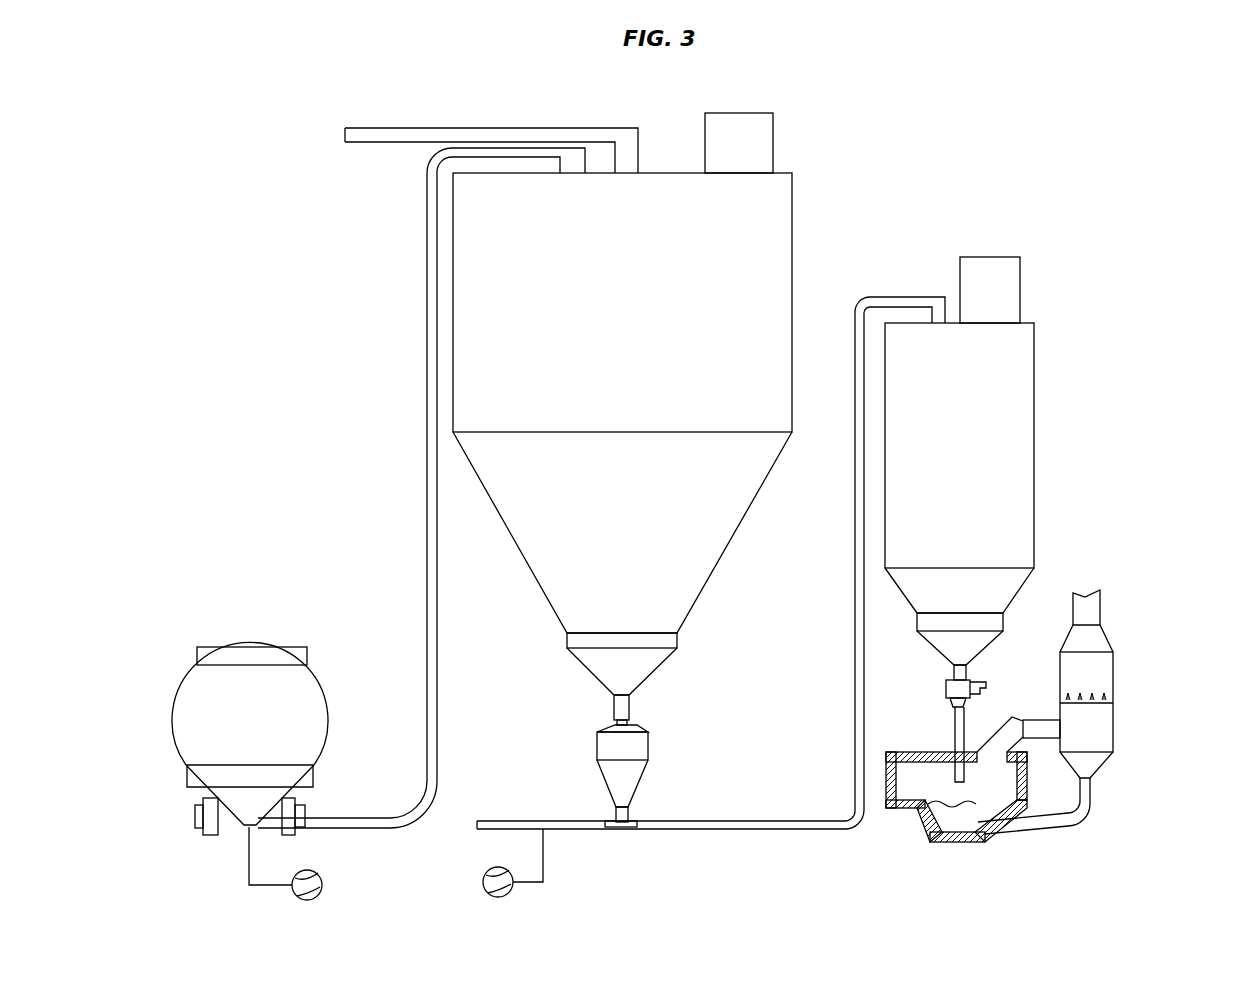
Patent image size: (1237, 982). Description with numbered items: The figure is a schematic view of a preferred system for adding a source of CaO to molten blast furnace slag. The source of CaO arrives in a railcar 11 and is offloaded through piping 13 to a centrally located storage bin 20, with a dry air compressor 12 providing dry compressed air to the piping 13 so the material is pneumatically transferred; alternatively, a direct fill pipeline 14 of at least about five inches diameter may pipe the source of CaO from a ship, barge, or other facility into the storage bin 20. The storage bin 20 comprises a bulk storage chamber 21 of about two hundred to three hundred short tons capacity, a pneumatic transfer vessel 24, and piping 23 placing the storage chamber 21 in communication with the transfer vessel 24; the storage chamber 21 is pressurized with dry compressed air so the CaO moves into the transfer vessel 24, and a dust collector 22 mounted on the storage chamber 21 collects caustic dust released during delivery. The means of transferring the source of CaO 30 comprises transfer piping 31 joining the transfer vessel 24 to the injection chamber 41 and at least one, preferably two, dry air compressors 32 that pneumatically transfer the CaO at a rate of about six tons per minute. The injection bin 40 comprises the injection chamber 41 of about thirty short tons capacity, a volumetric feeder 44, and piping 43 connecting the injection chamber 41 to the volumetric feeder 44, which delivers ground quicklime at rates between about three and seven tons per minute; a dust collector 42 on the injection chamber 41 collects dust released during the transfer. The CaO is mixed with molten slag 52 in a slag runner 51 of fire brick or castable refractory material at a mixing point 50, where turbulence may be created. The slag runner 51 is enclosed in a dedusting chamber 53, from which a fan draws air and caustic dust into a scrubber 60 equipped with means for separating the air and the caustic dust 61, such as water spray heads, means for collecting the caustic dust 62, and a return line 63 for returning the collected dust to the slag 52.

The railcar 11 is at (235, 712).
The dry air compressor 12 is at (322, 884).
The piping 13 is at (390, 815).
The direct fill pipeline 14 is at (357, 144).
The storage bin 20 is at (665, 467).
The bulk storage chamber 21 is at (616, 304).
The dust collector 22 is at (728, 152).
The piping 23 is at (630, 708).
The pneumatic transfer vessel 24 is at (650, 748).
The means of transferring the source of CaO 30 is at (684, 599).
The transfer piping 31 is at (767, 820).
The dry air compressor 32 is at (482, 883).
The injection bin 40 is at (1014, 519).
The injection chamber 41 is at (946, 440).
The dust collector 42 is at (978, 305).
The piping 43 is at (967, 670).
The volumetric feeder 44 is at (947, 687).
The mixing point 50 is at (947, 790).
The slag runner 51 is at (920, 833).
The molten slag 52 is at (960, 843).
The dedusting chamber 53 is at (908, 795).
The scrubber 60 is at (1101, 730).
The means for separating the air and the caustic dust 61 is at (1092, 702).
The means for collecting the caustic dust 62 is at (1107, 762).
The return line 63 is at (1068, 816).